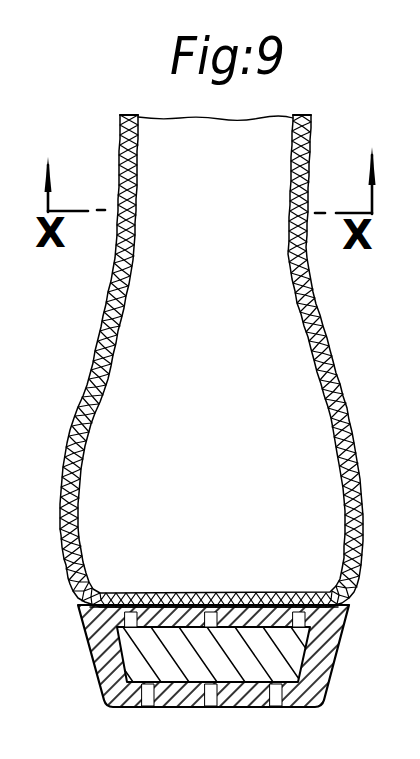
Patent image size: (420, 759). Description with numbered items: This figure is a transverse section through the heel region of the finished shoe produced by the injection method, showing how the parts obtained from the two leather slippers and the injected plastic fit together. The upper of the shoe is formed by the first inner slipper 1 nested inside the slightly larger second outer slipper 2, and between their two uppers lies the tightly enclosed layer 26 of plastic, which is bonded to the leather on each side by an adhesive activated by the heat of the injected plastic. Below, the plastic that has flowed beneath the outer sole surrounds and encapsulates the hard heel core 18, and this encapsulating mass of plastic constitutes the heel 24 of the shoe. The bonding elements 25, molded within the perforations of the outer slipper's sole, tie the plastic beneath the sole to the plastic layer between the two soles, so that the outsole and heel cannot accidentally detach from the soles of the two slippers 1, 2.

The first inner slipper 1 is at (105, 288).
The second outer slipper 2 is at (138, 294).
The layer of plastic 26 is at (110, 348).
The heel 24 is at (88, 647).
The heel core 18 is at (283, 660).
The bonding elements 25 is at (167, 607).